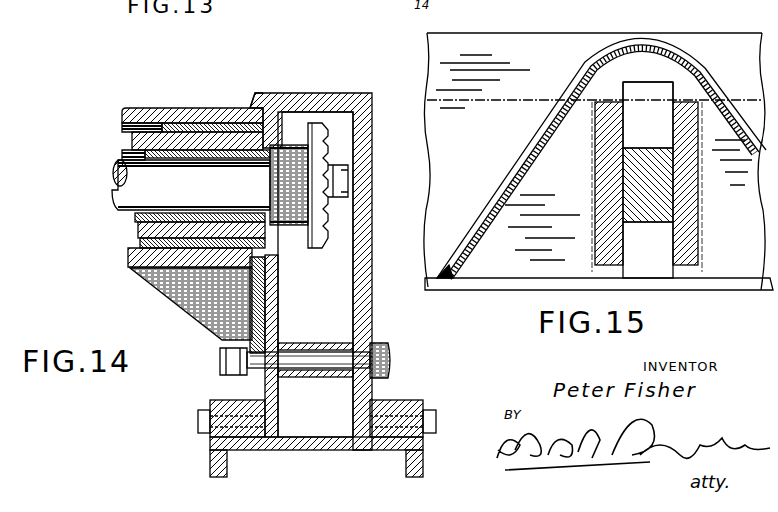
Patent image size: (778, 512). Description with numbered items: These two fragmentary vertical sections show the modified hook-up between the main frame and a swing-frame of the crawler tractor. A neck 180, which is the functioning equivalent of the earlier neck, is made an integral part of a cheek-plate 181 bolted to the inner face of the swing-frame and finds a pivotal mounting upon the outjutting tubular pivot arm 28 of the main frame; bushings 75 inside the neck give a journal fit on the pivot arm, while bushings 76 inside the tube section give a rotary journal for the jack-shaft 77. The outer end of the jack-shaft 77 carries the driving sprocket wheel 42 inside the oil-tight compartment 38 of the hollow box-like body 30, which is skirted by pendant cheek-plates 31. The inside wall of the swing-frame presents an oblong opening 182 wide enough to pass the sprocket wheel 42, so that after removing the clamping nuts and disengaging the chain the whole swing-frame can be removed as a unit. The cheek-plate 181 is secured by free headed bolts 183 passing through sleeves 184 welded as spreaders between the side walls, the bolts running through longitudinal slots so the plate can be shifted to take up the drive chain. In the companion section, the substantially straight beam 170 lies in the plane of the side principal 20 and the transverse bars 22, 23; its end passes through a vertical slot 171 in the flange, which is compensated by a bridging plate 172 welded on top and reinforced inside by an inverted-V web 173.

In FIG. 15, the angle-bar side principal 20 is at (480, 288).
In FIG. 15, the transverse bar 22 is at (690, 186).
In FIG. 15, the transverse bar 23 is at (600, 163).
In FIG. 14, the pivot arm 28 is at (125, 141).
In FIG. 14, the box-like body 30 is at (378, 325).
In FIG. 14, the cheek-plate 31 is at (210, 463).
In FIG. 14, the rearmost compartment 38 is at (342, 298).
In FIG. 14, the driving sprocket wheel 42 is at (314, 249).
In FIG. 14, the bushing 75 is at (212, 123).
In FIG. 14, the bushing 76 is at (135, 226).
In FIG. 14, the jack-shaft 77 is at (126, 180).
In FIG. 15, the beam 170 is at (655, 210).
In FIG. 15, the vertical slot 171 is at (662, 272).
In FIG. 15, the bridging plate 172 is at (601, 35).
In FIG. 15, the inverted-V web 173 is at (536, 138).
In FIG. 14, the neck 180 is at (165, 108).
In FIG. 14, the cheek-plate 181 is at (262, 85).
In FIG. 14, the opening 182 is at (283, 120).
In FIG. 14, the bolt 183 is at (220, 358).
In FIG. 14, the sleeve 184 is at (262, 350).